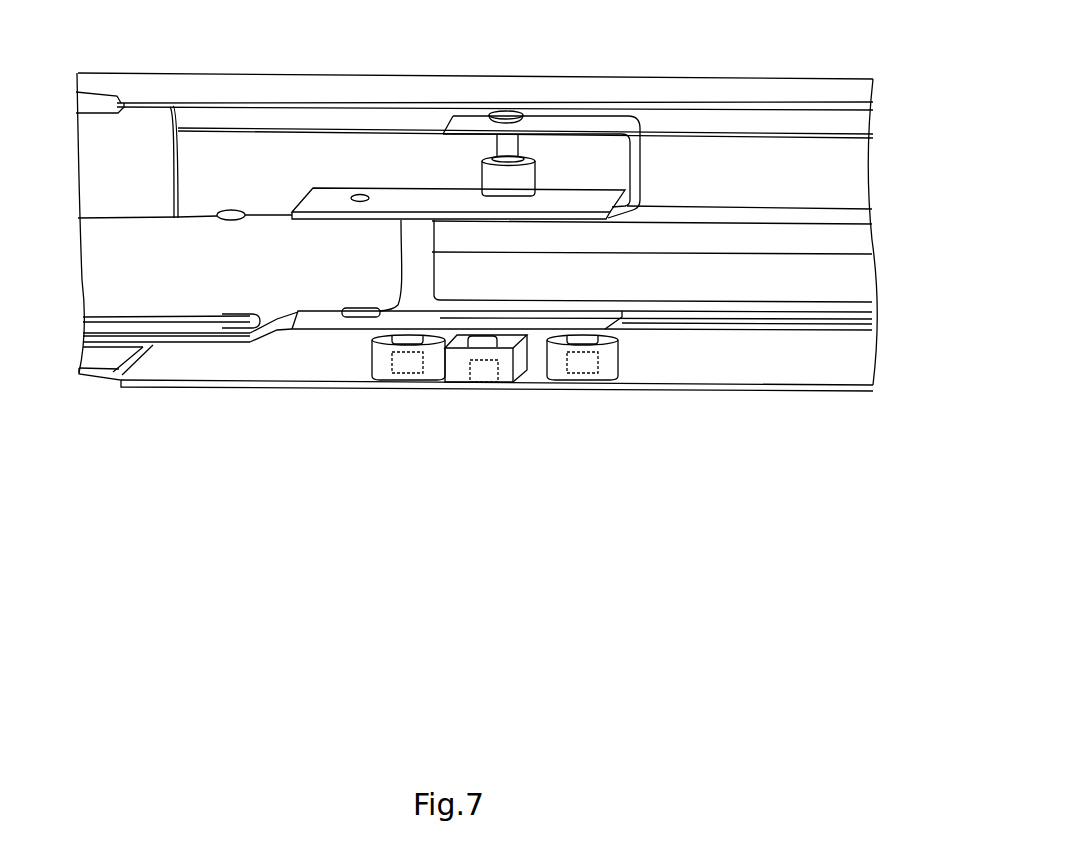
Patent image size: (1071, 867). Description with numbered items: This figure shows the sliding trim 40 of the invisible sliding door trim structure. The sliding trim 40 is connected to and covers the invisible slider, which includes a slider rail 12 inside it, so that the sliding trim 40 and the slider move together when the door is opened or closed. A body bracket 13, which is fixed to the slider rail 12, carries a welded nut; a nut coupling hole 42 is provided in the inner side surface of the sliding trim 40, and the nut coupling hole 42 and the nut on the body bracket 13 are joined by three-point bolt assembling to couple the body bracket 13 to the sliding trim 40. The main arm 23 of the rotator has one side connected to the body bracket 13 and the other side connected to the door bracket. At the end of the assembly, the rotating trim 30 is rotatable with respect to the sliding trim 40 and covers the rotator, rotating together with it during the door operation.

The slider rail 12 is at (733, 285).
The body bracket 13 is at (401, 197).
The main arm 23 is at (188, 293).
The rotating trim 30 is at (103, 163).
The sliding trim 40 is at (713, 122).
The nut coupling hole 42 is at (582, 370).